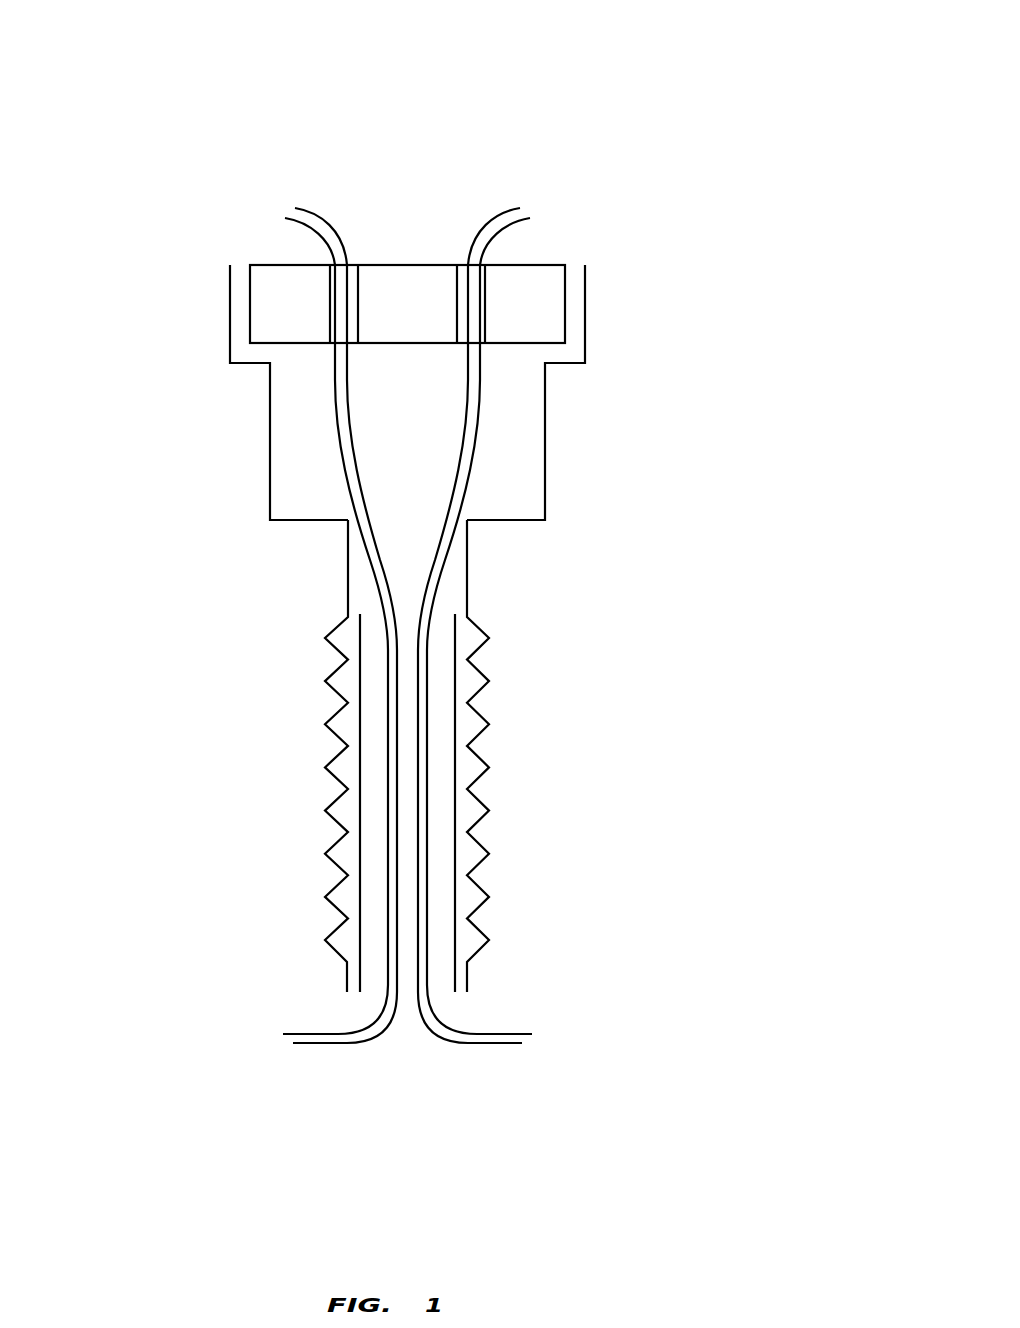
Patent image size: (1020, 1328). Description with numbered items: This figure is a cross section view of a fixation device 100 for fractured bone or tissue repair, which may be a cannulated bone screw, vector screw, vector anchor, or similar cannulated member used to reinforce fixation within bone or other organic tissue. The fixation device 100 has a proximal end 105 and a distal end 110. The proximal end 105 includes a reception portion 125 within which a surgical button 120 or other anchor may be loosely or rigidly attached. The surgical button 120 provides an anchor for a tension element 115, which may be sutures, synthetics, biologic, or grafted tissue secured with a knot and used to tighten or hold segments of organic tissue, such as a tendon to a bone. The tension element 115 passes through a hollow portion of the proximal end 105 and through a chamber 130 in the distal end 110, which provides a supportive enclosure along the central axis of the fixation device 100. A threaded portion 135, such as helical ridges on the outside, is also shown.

The fixation device 100 is at (622, 88).
The proximal end 105 is at (205, 518).
The distal end 110 is at (210, 993).
The tension element 115 is at (320, 218).
The surgical button 120 is at (538, 265).
The reception portion 125 is at (642, 395).
The chamber 130 is at (445, 707).
The threaded portion 135 is at (480, 848).